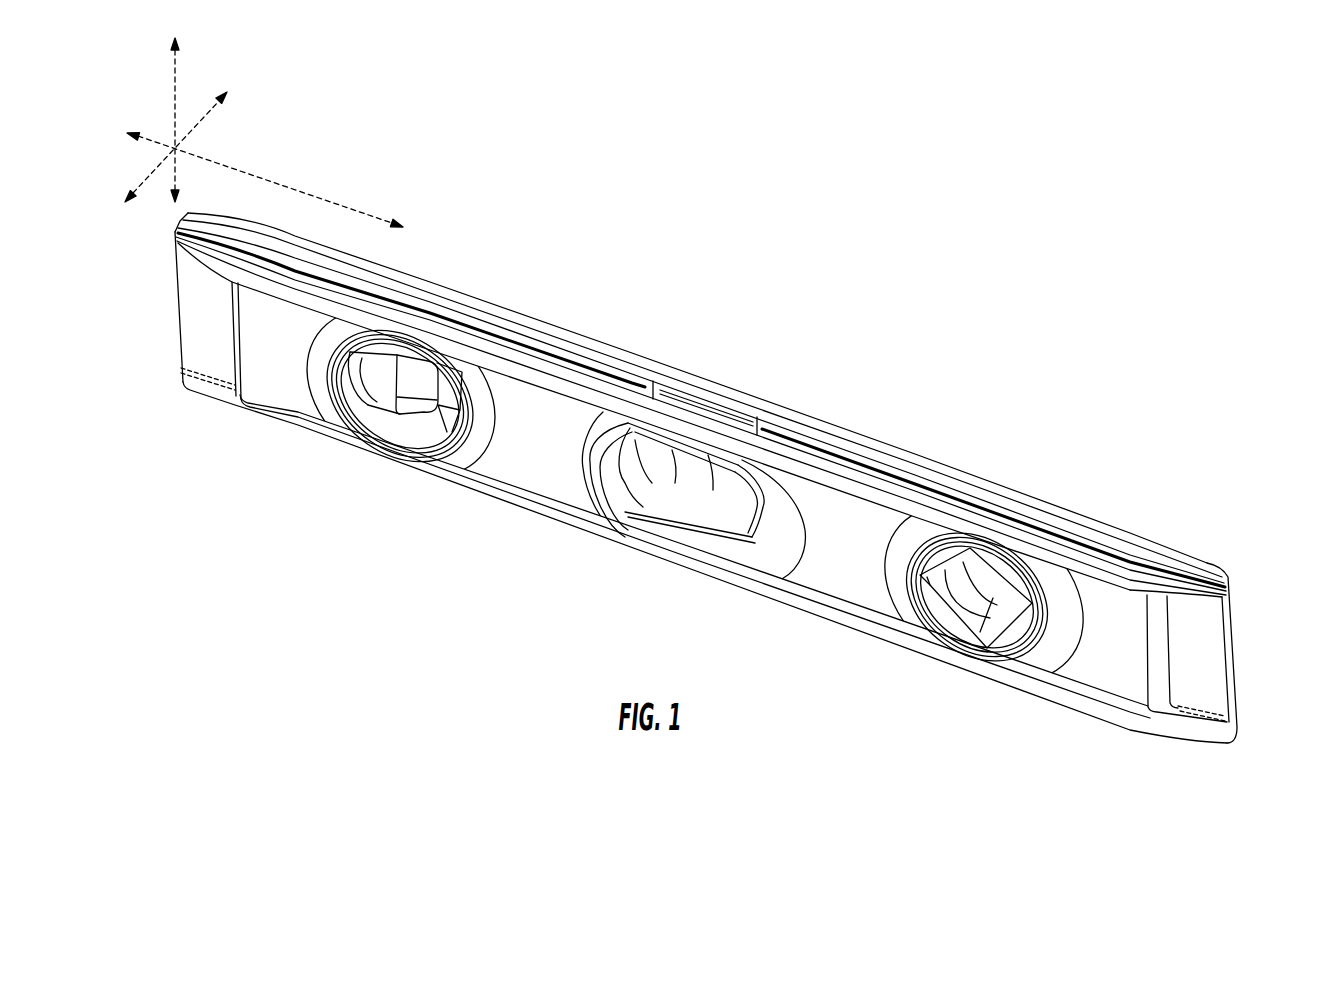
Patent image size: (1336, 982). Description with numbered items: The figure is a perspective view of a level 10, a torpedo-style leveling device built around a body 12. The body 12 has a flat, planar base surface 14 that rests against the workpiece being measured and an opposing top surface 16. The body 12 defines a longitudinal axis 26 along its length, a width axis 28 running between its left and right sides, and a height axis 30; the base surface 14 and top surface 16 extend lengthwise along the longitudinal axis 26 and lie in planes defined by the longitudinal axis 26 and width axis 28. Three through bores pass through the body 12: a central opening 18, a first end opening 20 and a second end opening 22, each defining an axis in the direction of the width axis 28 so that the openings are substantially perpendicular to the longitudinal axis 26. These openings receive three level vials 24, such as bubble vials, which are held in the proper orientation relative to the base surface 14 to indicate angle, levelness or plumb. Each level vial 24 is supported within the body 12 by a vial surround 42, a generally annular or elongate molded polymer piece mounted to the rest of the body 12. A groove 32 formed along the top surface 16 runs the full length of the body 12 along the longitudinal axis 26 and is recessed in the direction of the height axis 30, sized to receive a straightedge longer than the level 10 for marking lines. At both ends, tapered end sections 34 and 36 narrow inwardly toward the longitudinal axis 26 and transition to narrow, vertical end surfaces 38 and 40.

The level 10 is at (1018, 268).
The body 12 is at (1055, 438).
The base surface 14 is at (690, 569).
The top surface 16 is at (632, 353).
The central opening 18 is at (677, 517).
The first end opening 20 is at (382, 420).
The second end opening 22 is at (955, 608).
The level vials 24 is at (414, 413).
The longitudinal axis 26 is at (372, 212).
The width axis 28 is at (192, 128).
The height axis 30 is at (178, 83).
The groove 32 is at (915, 462).
The tapered end section 34 is at (175, 405).
The tapered end section 36 is at (1190, 788).
The end surface 38 is at (177, 307).
The end surface 40 is at (1232, 648).
The vial surround 42 is at (367, 407).